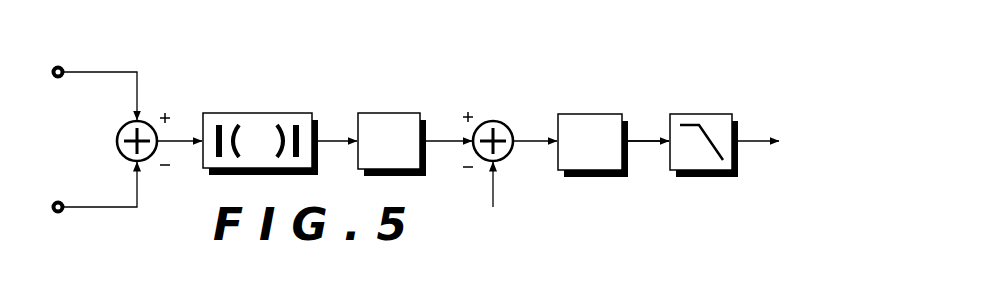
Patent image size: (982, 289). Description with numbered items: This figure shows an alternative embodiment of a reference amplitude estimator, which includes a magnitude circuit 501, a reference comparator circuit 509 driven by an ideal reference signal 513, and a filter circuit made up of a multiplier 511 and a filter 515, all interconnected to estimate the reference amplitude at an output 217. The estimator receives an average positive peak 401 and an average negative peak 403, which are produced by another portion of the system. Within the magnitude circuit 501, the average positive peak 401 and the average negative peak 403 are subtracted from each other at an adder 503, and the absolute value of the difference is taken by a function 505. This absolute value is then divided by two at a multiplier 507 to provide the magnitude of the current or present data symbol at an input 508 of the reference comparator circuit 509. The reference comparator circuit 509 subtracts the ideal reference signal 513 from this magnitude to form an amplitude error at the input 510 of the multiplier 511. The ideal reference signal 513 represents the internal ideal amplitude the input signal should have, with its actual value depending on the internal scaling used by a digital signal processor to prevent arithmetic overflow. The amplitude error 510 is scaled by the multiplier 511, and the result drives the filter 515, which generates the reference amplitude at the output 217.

The average positive peak 401 is at (88, 71).
The average negative peak 403 is at (88, 206).
The magnitude circuit 501 is at (223, 76).
The adder 503 is at (147, 120).
The absolute value function 505 is at (258, 113).
The multiplier 507 is at (392, 113).
The input of the reference comparator circuit 508 is at (437, 137).
The reference comparator circuit 509 is at (487, 122).
The amplitude error input 510 is at (643, 140).
The multiplier 511 is at (590, 114).
The ideal reference signal 513 is at (493, 197).
The filter 515 is at (700, 114).
The output 217 is at (758, 141).